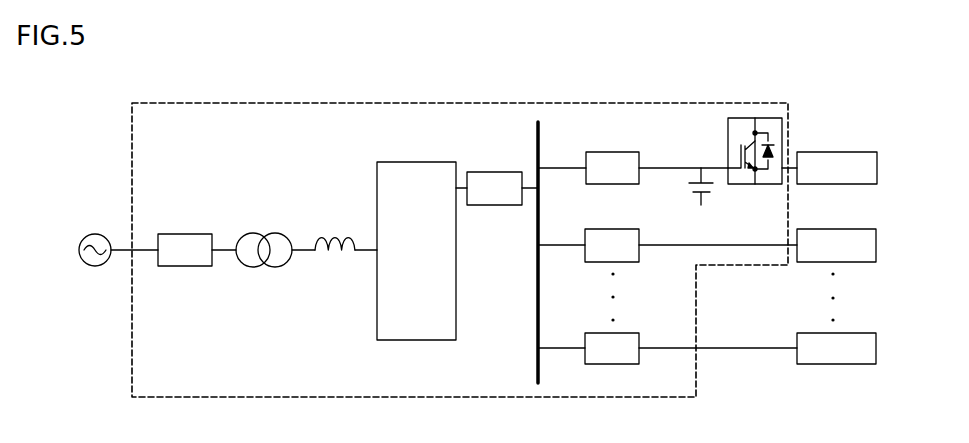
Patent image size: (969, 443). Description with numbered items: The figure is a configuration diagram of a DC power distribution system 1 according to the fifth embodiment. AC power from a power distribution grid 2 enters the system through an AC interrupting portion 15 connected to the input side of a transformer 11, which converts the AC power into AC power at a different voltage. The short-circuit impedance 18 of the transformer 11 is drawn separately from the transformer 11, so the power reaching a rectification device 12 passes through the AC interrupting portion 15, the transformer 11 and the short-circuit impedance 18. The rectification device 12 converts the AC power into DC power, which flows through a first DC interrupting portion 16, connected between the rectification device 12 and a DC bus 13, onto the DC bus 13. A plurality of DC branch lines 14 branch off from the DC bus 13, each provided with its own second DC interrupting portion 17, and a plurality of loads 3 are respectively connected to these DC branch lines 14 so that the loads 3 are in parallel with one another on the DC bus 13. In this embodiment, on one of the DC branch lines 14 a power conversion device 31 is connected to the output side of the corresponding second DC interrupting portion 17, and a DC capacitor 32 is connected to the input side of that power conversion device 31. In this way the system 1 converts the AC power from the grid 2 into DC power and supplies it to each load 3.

The DC power distribution system 1 is at (379, 102).
The power distribution grid 2 is at (98, 232).
The load 3 is at (858, 159).
The transformer 11 is at (265, 232).
The rectification device 12 is at (420, 162).
The DC bus 13 is at (536, 288).
The DC branch line 14 is at (558, 175).
The AC interrupting portion 15 is at (188, 232).
The first DC interrupting portion 16 is at (495, 171).
The second DC interrupting portion 17 is at (632, 158).
The short-circuit impedance 18 is at (335, 232).
The power conversion device 31 is at (753, 186).
The DC capacitor 32 is at (704, 173).